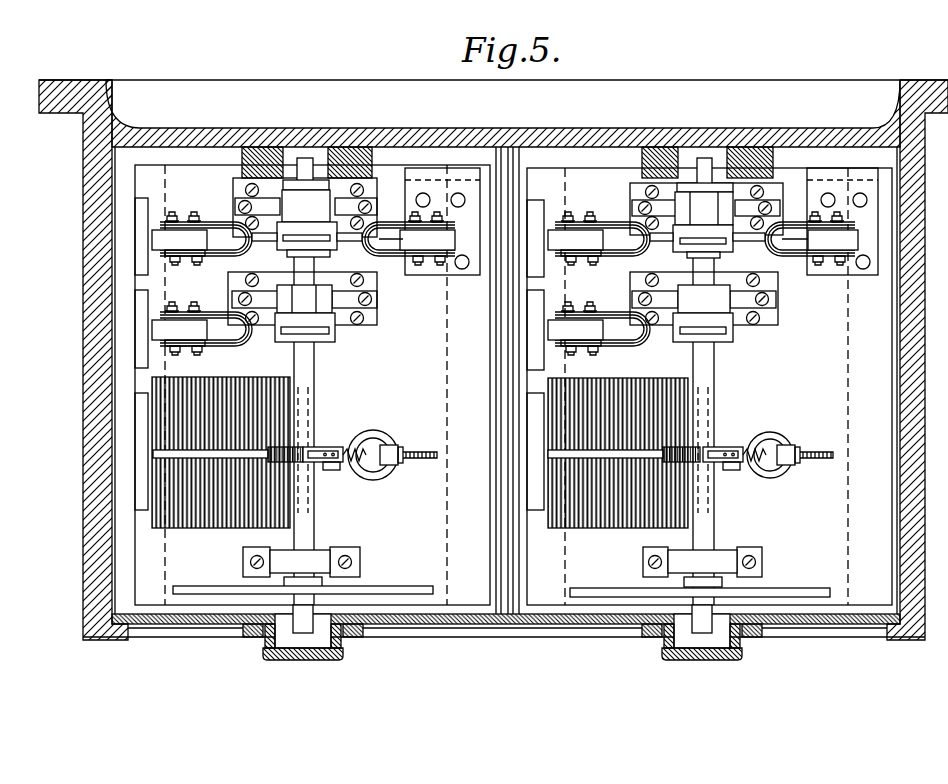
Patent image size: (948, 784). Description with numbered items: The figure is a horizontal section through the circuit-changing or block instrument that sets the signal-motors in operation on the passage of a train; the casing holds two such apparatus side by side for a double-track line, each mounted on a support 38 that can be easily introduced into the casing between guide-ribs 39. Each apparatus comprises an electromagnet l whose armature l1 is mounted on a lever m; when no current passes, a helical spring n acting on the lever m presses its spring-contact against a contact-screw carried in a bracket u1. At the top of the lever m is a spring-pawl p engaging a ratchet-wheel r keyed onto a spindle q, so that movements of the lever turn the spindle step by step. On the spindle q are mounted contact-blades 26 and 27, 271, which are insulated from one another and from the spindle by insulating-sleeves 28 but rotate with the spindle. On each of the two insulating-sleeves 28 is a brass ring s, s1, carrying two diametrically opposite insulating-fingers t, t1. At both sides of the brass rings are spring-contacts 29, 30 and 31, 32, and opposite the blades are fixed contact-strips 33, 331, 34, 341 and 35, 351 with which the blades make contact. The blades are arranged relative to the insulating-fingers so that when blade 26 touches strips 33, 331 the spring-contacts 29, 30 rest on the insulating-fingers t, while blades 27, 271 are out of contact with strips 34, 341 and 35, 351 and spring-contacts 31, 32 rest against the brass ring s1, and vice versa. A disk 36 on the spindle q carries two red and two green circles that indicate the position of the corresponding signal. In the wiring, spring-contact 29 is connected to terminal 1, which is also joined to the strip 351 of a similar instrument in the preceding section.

The terminal 1 is at (493, 370).
The support 38 is at (118, 290).
The guide-ribs 39 is at (165, 616).
The disk 36 is at (230, 596).
The spring-contact 31 is at (244, 191).
The spring-contact 32 is at (372, 200).
The spring-contact 29 is at (244, 290).
The spring-contact 30 is at (378, 302).
The contact-strip 34 is at (210, 226).
The contact-strip 341 is at (245, 256).
The contact-strip 33 is at (212, 316).
The contact-strip 331 is at (232, 345).
The contact-strip 35 is at (400, 252).
The contact-strip 351 is at (400, 216).
The contact-blade 27 is at (282, 244).
The contact-blade 271 is at (756, 240).
The contact-blade 26 is at (284, 334).
The insulating-sleeves 28 is at (306, 392).
The spindle q is at (316, 395).
The electromagnet l is at (200, 528).
The armature l1 is at (314, 508).
The ratchet-wheel r is at (270, 462).
The spring-pawl p is at (325, 447).
The lever m is at (333, 472).
The helical spring n is at (368, 466).
The bracket u1 is at (375, 432).
The brass ring s is at (788, 334).
The brass ring s1 is at (330, 195).
The insulating-fingers t is at (503, 299).
The insulating-fingers t1 is at (790, 190).